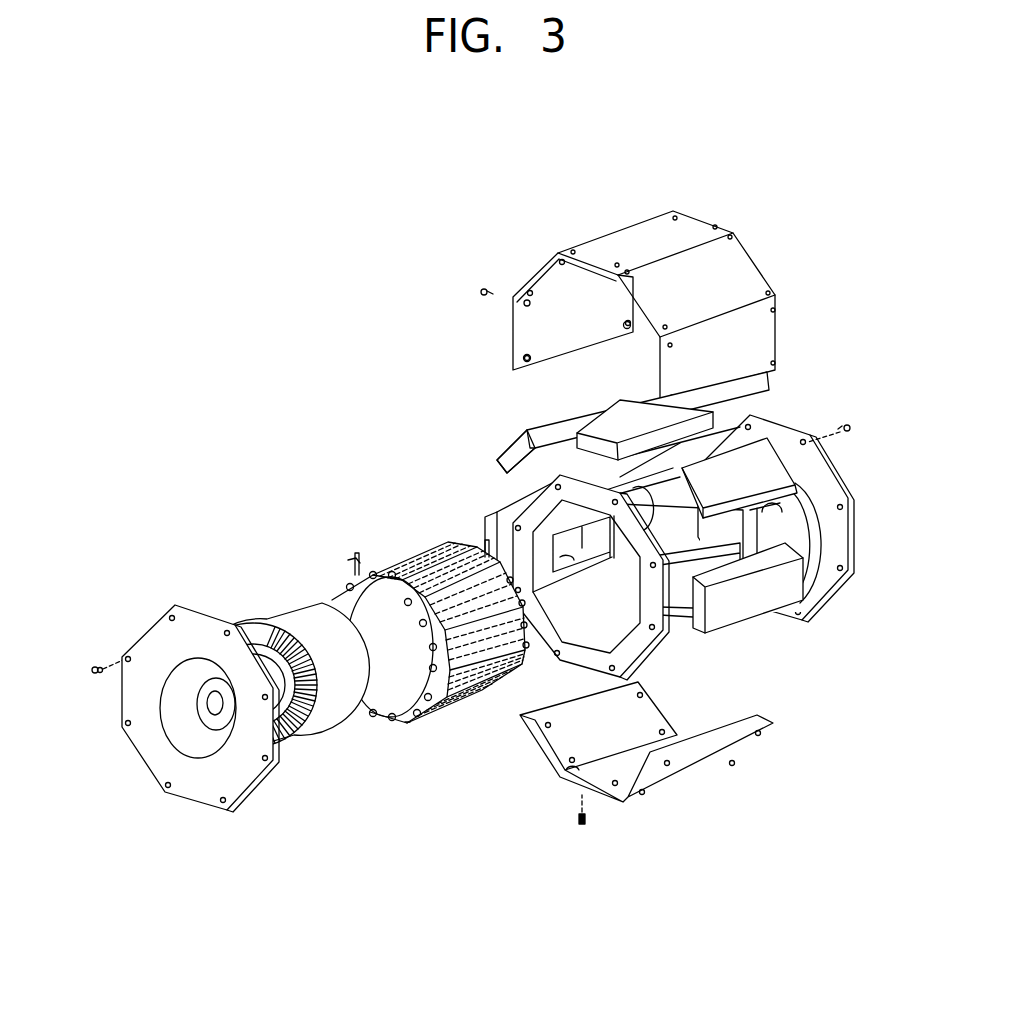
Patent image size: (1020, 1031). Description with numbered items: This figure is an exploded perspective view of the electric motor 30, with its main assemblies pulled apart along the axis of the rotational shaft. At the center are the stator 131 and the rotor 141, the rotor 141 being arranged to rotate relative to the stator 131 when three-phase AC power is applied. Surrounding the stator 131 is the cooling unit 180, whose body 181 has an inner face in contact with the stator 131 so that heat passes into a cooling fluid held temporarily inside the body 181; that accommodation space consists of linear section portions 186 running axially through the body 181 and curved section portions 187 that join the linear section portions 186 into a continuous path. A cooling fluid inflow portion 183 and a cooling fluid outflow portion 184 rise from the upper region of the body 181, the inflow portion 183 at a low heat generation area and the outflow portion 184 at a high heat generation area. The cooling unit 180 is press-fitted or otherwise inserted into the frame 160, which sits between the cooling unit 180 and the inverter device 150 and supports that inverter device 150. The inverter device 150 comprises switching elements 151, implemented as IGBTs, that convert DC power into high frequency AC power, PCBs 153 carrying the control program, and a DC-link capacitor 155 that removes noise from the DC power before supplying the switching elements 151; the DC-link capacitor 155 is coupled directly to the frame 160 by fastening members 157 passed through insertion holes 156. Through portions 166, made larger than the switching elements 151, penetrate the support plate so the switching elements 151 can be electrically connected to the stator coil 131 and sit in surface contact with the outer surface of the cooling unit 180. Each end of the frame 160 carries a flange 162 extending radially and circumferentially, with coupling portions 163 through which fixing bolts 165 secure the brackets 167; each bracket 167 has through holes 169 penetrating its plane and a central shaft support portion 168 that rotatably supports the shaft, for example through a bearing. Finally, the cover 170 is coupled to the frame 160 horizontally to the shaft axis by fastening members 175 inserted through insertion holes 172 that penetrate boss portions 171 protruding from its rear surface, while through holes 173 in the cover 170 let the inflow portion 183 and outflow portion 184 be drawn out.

The motor 30 is at (258, 398).
The stator 131 is at (279, 634).
The rotor 141 is at (270, 650).
The inverter device 150 is at (680, 772).
The switching elements 151 is at (607, 430).
The PCBs 153 is at (543, 430).
The DC-link capacitor 155 is at (688, 780).
The insertion holes 156 is at (567, 772).
The fastening members 157 is at (590, 822).
The frame 160 is at (680, 620).
The flange 162 is at (531, 507).
The coupling portions 163 is at (557, 485).
The fixing bolts 165 is at (847, 424).
The through portions 166 is at (555, 657).
The brackets 167 is at (483, 588).
The shaft support portion 168 is at (215, 722).
The through holes 169 is at (802, 447).
The cover 170 is at (610, 283).
The boss portions 171 is at (523, 303).
The insertion holes 172 is at (737, 233).
The through holes 173 is at (713, 224).
The fastening members 175 is at (480, 290).
The cooling unit 180 is at (425, 619).
The body 181 is at (407, 567).
The cooling fluid inflow portion 183 is at (350, 560).
The cooling fluid outflow portion 184 is at (484, 548).
The linear section portions 186 is at (443, 712).
The curved section portions 187 is at (406, 722).